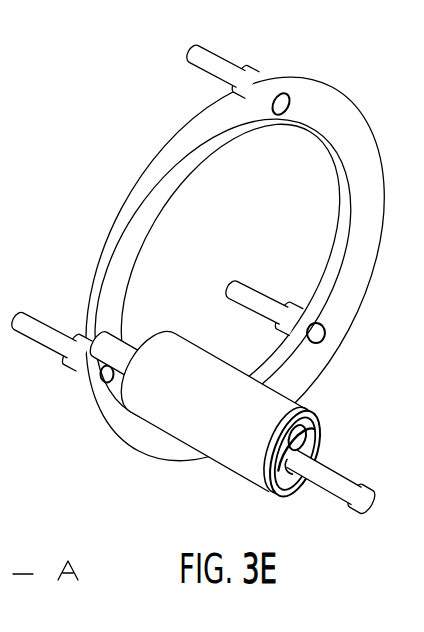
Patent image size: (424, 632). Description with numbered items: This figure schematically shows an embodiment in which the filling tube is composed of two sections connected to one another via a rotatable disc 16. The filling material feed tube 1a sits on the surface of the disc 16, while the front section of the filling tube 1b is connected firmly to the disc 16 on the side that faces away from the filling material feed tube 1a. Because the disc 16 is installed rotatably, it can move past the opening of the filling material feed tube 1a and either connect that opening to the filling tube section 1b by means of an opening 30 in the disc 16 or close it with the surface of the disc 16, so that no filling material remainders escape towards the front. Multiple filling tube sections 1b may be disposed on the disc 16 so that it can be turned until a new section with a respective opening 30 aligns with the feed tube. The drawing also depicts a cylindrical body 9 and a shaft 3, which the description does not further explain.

The rotatable disc 16 is at (343, 93).
The opening 30 is at (284, 92).
The filling material feed tube 1a is at (128, 336).
The front section of the filling tube 1b is at (33, 347).
The cylindrical body 9 is at (296, 411).
The shaft 3 is at (346, 474).